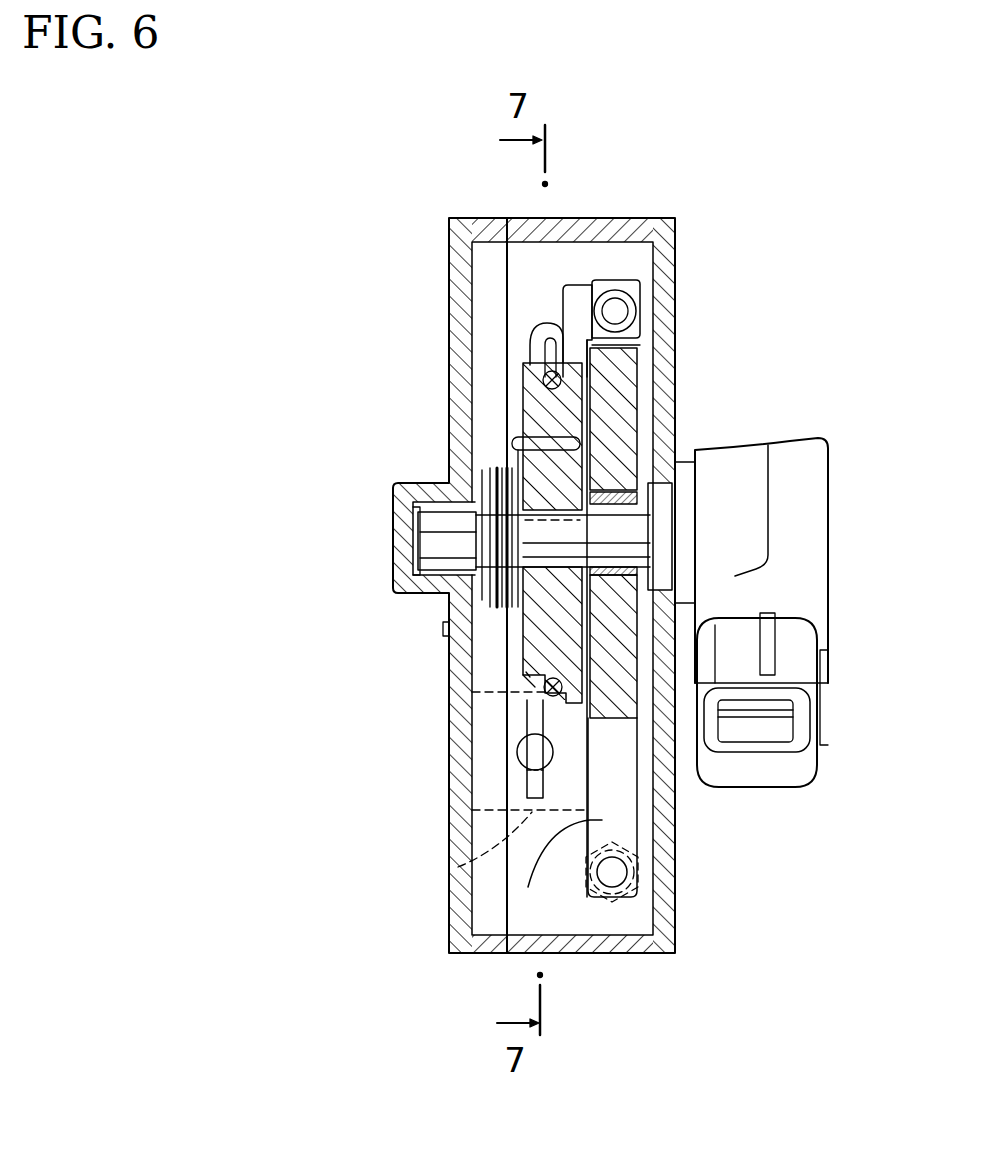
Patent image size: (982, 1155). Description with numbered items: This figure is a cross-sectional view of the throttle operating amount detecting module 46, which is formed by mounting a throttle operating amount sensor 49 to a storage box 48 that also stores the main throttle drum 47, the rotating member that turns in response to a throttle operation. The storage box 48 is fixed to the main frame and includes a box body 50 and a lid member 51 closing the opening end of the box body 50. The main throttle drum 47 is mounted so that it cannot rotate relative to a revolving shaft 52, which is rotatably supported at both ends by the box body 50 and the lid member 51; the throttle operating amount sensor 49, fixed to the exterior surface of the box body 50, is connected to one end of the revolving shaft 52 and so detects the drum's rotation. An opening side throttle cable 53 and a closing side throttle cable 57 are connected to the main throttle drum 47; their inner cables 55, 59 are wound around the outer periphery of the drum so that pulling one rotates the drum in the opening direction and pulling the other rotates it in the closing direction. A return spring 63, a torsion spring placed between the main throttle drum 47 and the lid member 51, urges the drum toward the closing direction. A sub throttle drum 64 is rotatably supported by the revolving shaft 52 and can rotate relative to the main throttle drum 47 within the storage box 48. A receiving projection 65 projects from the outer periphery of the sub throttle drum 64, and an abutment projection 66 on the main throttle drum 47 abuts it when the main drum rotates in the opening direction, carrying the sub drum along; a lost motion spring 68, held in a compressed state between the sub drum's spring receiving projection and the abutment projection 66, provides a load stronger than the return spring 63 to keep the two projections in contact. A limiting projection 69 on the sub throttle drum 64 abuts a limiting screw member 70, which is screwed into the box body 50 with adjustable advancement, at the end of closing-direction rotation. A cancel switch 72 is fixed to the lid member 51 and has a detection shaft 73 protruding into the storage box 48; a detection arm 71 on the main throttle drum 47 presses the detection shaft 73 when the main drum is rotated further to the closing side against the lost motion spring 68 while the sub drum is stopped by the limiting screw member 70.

The throttle operating amount detecting module 46 is at (676, 372).
The main throttle drum 47 is at (523, 415).
The storage box 48 is at (347, 158).
The throttle operating amount sensor 49 is at (816, 568).
The box body 50 is at (523, 218).
The lid member 51 is at (460, 300).
The revolving shaft 52 is at (433, 538).
The opening side throttle cable 53 is at (552, 318).
The inner cable 55 is at (527, 372).
The closing side throttle cable 57 is at (530, 677).
The inner cable 59 is at (548, 693).
The return spring 63 is at (512, 443).
The sub throttle drum 64 is at (628, 445).
The receiving projection 65 is at (628, 280).
The abutment projection 66 is at (582, 298).
The lost motion spring 68 is at (640, 313).
The limiting projection 69 is at (576, 822).
The limiting screw member 70 is at (612, 900).
The detection arm 71 is at (520, 808).
The cancel switch 72 is at (458, 867).
The detection shaft 73 is at (513, 758).